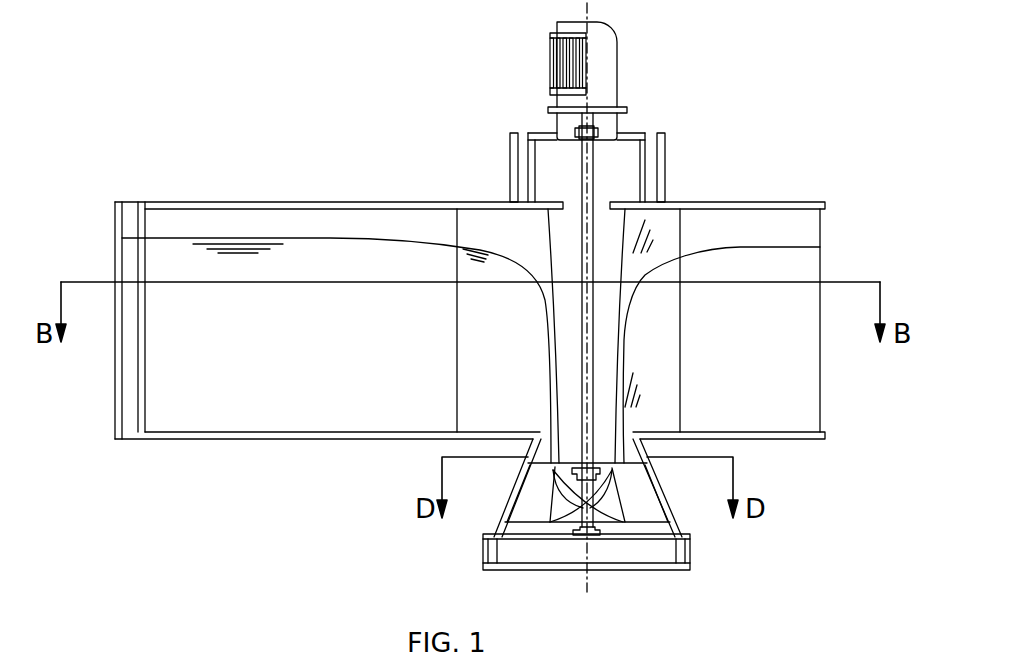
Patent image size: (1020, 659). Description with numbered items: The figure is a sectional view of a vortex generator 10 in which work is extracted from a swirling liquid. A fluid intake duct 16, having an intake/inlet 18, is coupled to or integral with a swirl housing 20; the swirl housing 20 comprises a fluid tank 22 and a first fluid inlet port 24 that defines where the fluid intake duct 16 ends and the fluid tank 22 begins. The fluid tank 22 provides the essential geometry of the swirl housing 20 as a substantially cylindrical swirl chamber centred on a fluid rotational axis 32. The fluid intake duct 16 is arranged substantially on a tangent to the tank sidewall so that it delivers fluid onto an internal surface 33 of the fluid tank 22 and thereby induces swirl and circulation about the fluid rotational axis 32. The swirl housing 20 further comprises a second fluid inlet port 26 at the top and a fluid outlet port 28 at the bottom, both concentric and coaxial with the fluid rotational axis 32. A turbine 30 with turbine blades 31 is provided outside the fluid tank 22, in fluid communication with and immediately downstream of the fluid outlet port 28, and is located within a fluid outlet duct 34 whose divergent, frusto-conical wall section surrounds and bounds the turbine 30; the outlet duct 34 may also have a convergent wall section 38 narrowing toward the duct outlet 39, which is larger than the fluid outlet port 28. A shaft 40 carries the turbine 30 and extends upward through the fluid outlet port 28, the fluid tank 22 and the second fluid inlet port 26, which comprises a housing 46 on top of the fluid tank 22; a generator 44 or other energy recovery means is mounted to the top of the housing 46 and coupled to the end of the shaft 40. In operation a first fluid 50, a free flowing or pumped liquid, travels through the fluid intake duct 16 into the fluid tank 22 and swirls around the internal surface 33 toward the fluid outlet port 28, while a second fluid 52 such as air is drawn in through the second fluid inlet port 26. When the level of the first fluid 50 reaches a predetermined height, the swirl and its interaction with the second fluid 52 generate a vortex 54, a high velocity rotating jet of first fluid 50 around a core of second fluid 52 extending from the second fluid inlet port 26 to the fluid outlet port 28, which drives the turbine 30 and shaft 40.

The vortex generator 10 is at (114, 82).
The fluid intake duct 16 is at (227, 202).
The intake/inlet 18 is at (115, 232).
The swirl housing 20 is at (772, 202).
The fluid tank 22 is at (820, 370).
The first fluid inlet port 24 is at (455, 202).
The second fluid inlet port 26 is at (598, 215).
The fluid outlet port 28 is at (637, 434).
The turbine 30 is at (497, 523).
The turbine blades 31 is at (528, 505).
The fluid rotational axis 32 is at (587, 592).
The internal surface 33 is at (820, 303).
The fluid outlet duct 34 is at (667, 498).
The convergent wall section 38 is at (485, 570).
The duct outlet 39 is at (527, 571).
The shaft 40 is at (592, 180).
The generator 44 is at (618, 100).
The housing 46 is at (508, 153).
The first fluid 50 is at (322, 238).
The second fluid 52 is at (547, 167).
The vortex 54 is at (555, 323).